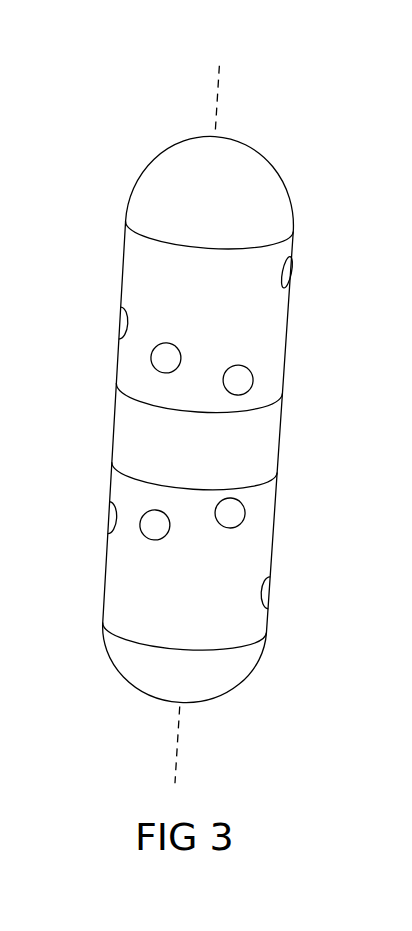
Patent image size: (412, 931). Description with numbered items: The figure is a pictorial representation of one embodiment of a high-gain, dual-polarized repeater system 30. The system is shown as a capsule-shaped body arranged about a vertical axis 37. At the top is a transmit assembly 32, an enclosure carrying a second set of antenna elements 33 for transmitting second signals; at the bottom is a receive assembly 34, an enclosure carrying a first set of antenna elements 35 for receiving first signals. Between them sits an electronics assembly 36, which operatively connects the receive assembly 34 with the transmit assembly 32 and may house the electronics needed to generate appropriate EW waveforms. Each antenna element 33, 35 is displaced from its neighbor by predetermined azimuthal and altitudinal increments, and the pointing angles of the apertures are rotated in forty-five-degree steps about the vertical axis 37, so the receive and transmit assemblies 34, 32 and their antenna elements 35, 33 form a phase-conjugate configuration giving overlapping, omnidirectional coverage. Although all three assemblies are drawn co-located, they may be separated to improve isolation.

The repeater system 30 is at (97, 422).
The transmit assembly 32 is at (109, 223).
The antenna elements of the second set 33 is at (240, 381).
The receive assembly 34 is at (96, 462).
The antenna elements of the first set 35 is at (232, 514).
The electronics assembly 36 is at (260, 447).
The vertical axis 37 is at (207, 412).